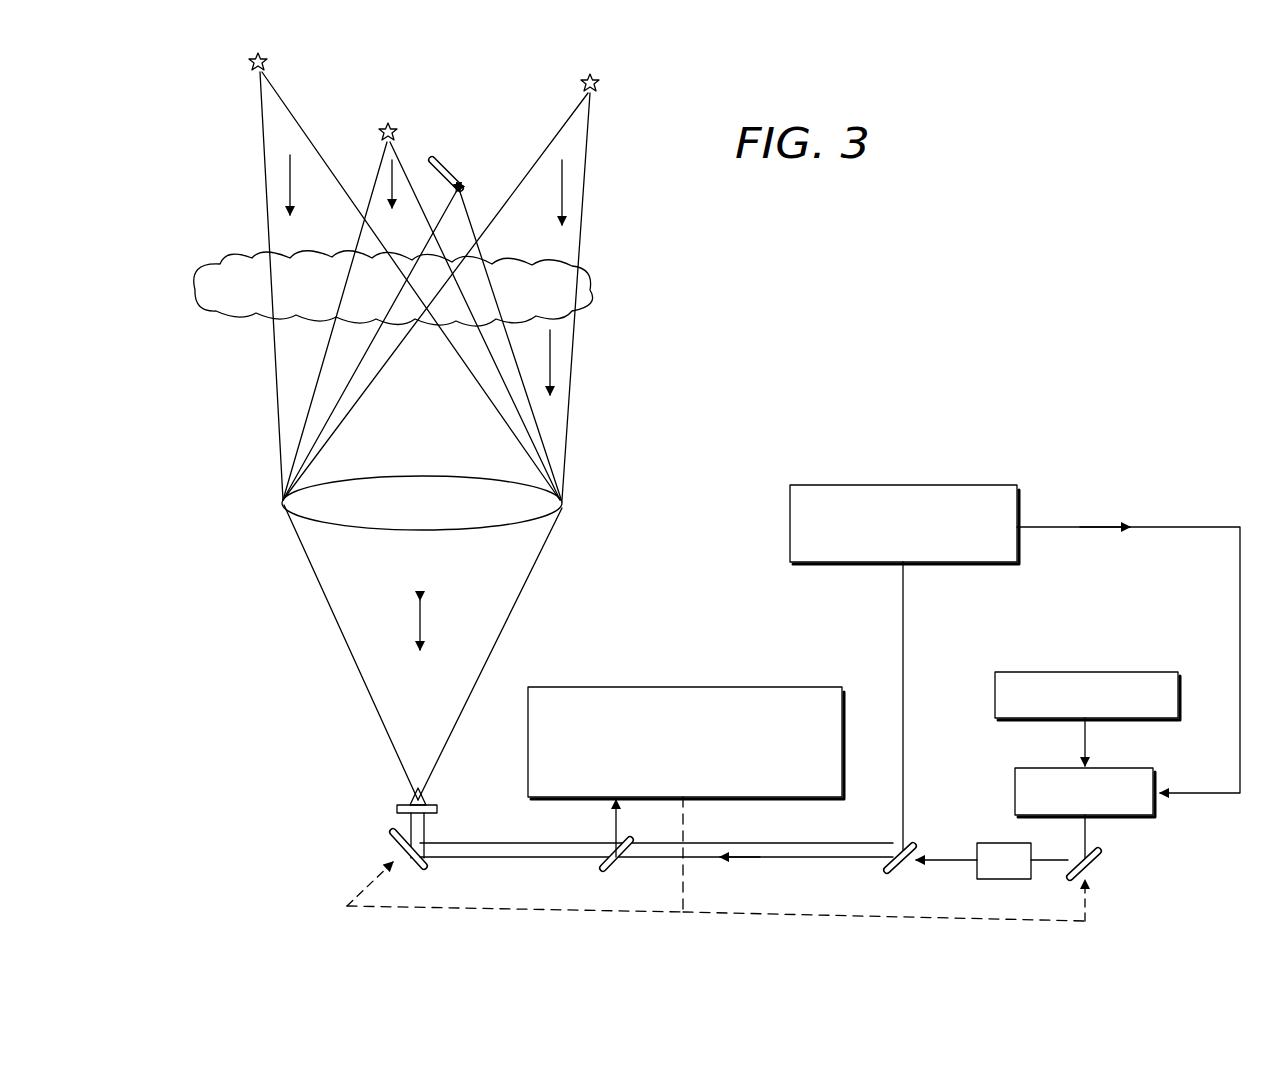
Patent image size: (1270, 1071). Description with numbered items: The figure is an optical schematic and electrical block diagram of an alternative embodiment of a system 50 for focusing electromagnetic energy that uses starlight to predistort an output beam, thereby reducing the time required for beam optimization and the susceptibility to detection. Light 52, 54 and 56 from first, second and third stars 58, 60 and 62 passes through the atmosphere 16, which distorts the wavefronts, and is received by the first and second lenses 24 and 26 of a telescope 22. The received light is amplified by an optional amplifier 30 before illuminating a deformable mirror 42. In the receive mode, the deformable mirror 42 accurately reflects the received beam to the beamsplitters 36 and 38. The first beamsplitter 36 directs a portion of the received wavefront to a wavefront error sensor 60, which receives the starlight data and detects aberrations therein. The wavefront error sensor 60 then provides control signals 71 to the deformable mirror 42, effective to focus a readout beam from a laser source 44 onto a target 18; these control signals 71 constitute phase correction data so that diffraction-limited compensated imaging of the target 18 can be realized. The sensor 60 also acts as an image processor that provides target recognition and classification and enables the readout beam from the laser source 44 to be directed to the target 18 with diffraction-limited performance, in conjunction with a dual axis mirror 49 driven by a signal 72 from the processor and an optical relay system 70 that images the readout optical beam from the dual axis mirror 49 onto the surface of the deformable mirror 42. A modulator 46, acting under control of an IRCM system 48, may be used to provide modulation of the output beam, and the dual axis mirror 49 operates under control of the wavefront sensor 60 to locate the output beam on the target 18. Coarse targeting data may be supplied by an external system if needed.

The atmosphere 16 is at (588, 282).
The target 18 is at (455, 163).
The telescope 22 is at (288, 628).
The first lens 24 is at (282, 502).
The second lens 26 is at (408, 796).
The amplifier 30 is at (397, 808).
The first beamsplitter 36 is at (602, 866).
The second beamsplitter 38 is at (910, 850).
The deformable mirror 42 is at (390, 832).
The laser source 44 is at (1085, 672).
The modulator 46 is at (1015, 790).
The IRCM system 48 is at (904, 485).
The dual axis mirror 49 is at (1102, 858).
The system 50 is at (1100, 380).
The light from first star 52 is at (277, 175).
The light from second star 54 is at (420, 240).
The light from third star 56 is at (560, 238).
The first star 58 is at (253, 70).
The wavefront error sensor 60 is at (383, 125).
The third star 62 is at (598, 92).
The optical relay system 70 is at (988, 880).
The control signals 71 is at (500, 912).
The signal 72 is at (845, 915).